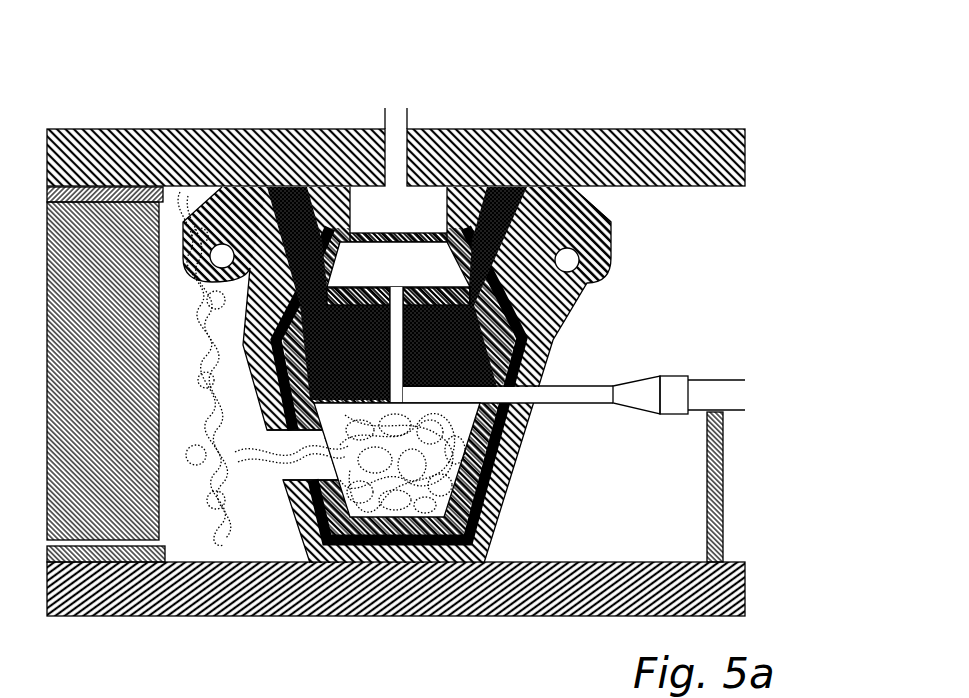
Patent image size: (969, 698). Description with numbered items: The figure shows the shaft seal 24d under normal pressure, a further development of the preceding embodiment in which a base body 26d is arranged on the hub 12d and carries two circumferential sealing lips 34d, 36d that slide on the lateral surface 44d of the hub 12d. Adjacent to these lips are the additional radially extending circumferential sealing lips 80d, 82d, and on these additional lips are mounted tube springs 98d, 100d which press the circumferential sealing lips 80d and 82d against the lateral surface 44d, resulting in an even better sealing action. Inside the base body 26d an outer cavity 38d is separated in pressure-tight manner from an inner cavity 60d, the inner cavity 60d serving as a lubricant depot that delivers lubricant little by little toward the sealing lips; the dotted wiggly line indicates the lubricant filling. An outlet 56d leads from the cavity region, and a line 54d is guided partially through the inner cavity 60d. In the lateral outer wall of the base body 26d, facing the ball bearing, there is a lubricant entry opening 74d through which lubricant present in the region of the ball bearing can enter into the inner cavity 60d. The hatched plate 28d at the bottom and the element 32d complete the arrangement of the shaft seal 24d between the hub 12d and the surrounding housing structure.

The hub 12d is at (117, 130).
The tube spring 100d is at (178, 187).
The additional circumferential sealing lip 82d is at (220, 187).
The circumferential sealing lip 36d is at (305, 345).
The left bar 32d is at (353, 284).
The outlet 56d is at (405, 284).
The circumferential sealing lip 34d is at (480, 340).
The additional circumferential sealing lip 80d is at (487, 330).
The tube spring 98d is at (610, 227).
The lateral surface 44d is at (730, 196).
The shaft seal 24d is at (464, 365).
The base body 26d is at (561, 336).
The outer cavity 38d is at (413, 274).
The supply pipe 54d is at (546, 412).
The inner cavity 60d is at (505, 498).
The lubricant entry opening 74d is at (287, 478).
The bottom plate 28d is at (400, 574).